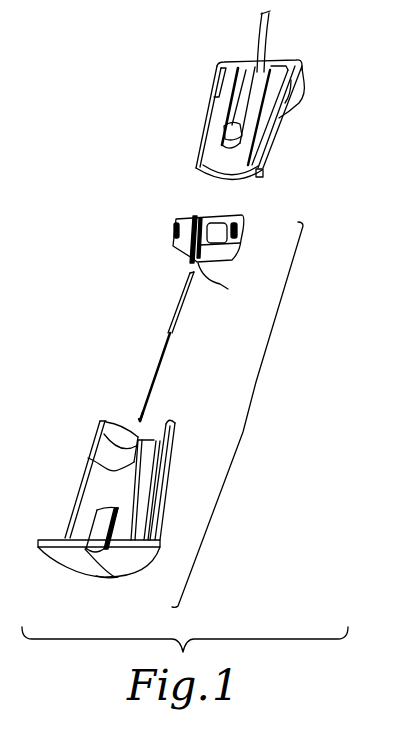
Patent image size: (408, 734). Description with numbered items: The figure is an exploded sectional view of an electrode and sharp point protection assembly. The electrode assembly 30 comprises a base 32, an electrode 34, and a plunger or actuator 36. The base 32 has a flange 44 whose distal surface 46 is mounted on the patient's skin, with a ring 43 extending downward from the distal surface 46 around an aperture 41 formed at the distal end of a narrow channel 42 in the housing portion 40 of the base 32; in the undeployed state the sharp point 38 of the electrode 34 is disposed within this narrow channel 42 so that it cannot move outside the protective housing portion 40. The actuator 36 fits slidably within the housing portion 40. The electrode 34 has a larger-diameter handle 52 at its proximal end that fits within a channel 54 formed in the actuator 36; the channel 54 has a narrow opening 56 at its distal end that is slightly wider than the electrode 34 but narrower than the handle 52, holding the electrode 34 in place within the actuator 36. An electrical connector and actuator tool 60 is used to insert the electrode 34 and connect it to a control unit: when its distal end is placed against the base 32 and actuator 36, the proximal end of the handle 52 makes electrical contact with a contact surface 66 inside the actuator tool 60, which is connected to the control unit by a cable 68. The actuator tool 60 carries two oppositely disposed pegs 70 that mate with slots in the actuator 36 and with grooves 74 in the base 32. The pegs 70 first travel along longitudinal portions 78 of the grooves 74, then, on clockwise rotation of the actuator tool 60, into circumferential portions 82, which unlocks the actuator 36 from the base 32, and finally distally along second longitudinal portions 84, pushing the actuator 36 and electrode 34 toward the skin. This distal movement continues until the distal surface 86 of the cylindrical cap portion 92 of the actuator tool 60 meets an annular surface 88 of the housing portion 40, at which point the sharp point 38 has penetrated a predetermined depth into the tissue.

The electrode assembly 30 is at (245, 432).
The base 32 is at (167, 470).
The electrode 34 is at (162, 355).
The actuator 36 is at (172, 237).
The sharp point 38 is at (140, 421).
The housing portion 40 is at (97, 492).
The aperture 41 is at (106, 577).
The narrow channel 42 is at (96, 522).
The ring 43 is at (82, 557).
The flange 44 is at (157, 543).
The distal surface 46 is at (130, 565).
The handle 52 is at (182, 308).
The channel 54 is at (203, 216).
The narrow opening 56 is at (219, 286).
The actuator tool 60 is at (212, 124).
The contact surface 66 is at (232, 130).
The cable 68 is at (257, 37).
The pegs 70 is at (266, 173).
The grooves 74 is at (143, 482).
The longitudinal portions 78 is at (100, 425).
The circumferential portions 82 is at (90, 460).
The second longitudinal portions 84 is at (137, 502).
The distal surface 86 is at (214, 100).
The annular surface 88 is at (175, 452).
The cylindrical cap portion 92 is at (301, 92).